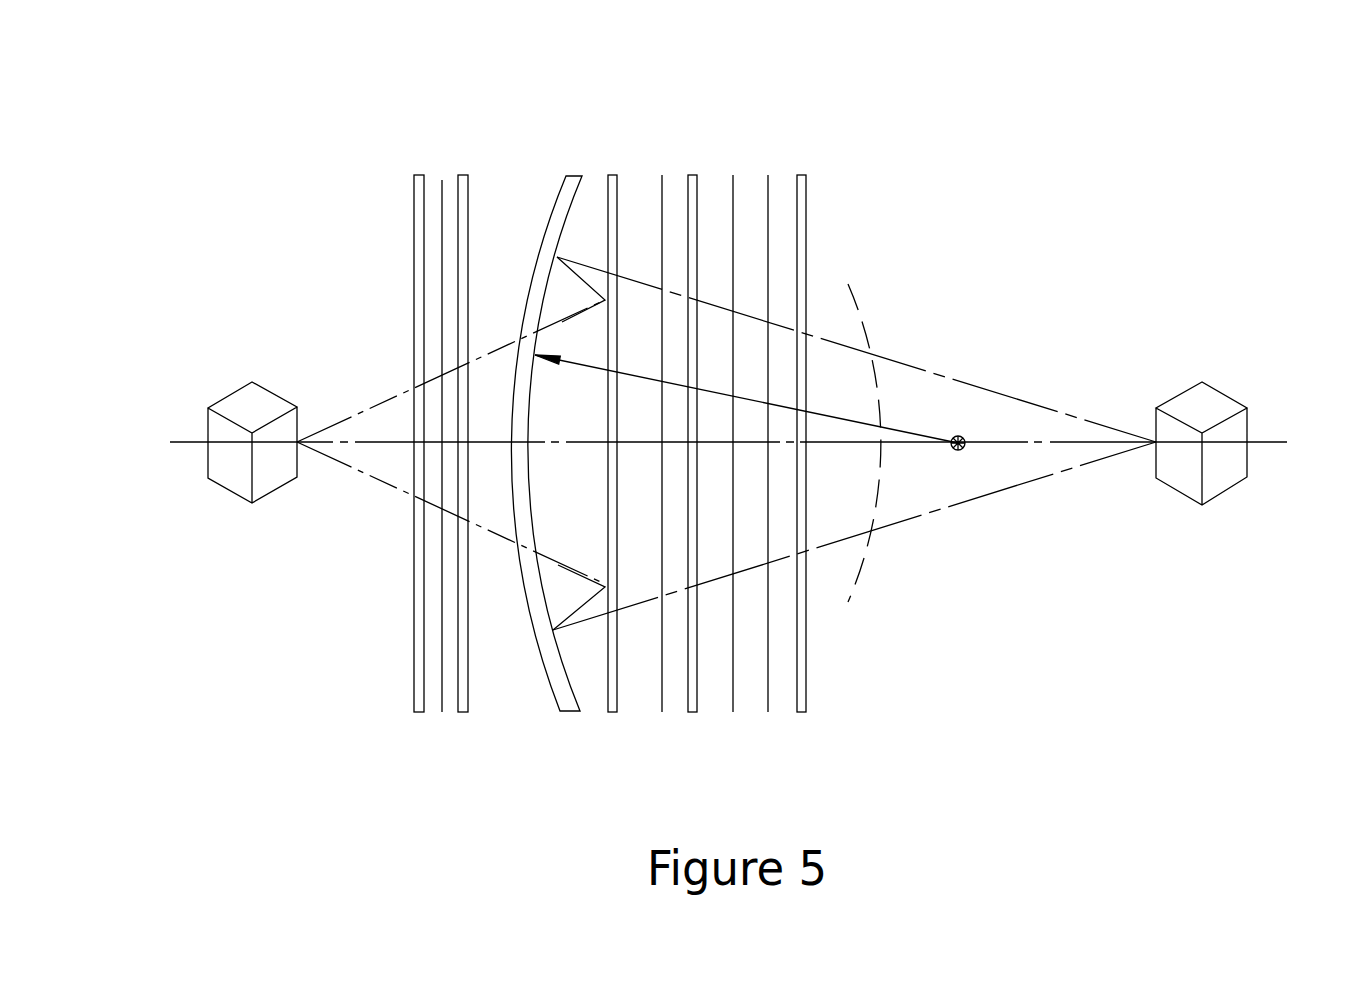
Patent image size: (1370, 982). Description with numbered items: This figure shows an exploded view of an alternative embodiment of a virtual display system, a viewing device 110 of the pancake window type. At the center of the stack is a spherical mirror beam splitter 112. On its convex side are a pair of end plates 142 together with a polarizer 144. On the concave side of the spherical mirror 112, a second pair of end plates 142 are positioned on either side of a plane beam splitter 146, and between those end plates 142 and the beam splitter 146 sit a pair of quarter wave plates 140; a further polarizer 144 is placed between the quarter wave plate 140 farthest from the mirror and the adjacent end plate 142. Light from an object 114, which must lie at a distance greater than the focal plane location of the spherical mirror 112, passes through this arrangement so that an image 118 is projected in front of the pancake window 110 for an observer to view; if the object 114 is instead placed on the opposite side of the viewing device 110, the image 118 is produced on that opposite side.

The viewing device 110 is at (1032, 83).
The spherical mirror beam splitter 112 is at (577, 173).
The object 114 is at (270, 465).
The image 118 is at (1215, 470).
The quarter wave plate 140 is at (733, 185).
The end plate 142 is at (414, 192).
The polarizer 144 is at (442, 182).
The plane beam splitter 146 is at (690, 712).